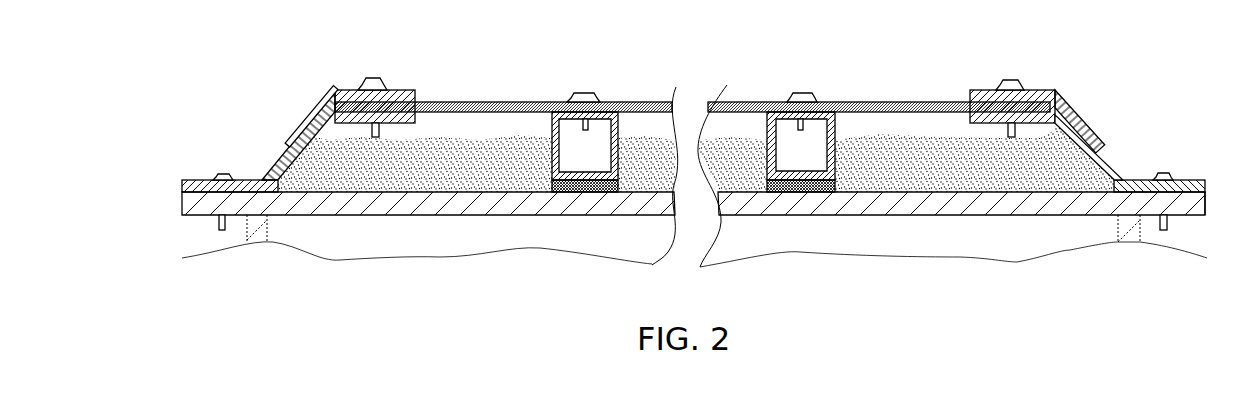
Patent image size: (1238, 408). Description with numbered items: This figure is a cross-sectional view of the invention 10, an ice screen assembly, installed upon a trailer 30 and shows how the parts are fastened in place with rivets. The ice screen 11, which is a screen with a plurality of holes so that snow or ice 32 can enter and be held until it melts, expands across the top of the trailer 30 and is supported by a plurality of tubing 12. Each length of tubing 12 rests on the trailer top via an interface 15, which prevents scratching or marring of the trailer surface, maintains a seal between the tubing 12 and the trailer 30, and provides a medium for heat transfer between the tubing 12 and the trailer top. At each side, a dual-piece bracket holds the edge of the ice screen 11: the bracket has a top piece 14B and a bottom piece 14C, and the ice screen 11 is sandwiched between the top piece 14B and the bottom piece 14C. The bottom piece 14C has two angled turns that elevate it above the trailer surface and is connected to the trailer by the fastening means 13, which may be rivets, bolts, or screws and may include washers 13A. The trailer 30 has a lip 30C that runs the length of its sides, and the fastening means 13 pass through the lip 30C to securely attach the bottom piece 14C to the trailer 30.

The ice screen 10 is at (692, 173).
The ice screen 11 is at (522, 102).
The tubing 12 is at (552, 158).
The fastening means 13 is at (369, 80).
The washers 13A is at (401, 91).
The top piece 14B is at (313, 112).
The bottom piece 14C is at (261, 182).
The interface 15 is at (583, 193).
The trailer 30 is at (992, 210).
The lip 30C is at (1200, 212).
The ice 32 is at (393, 181).